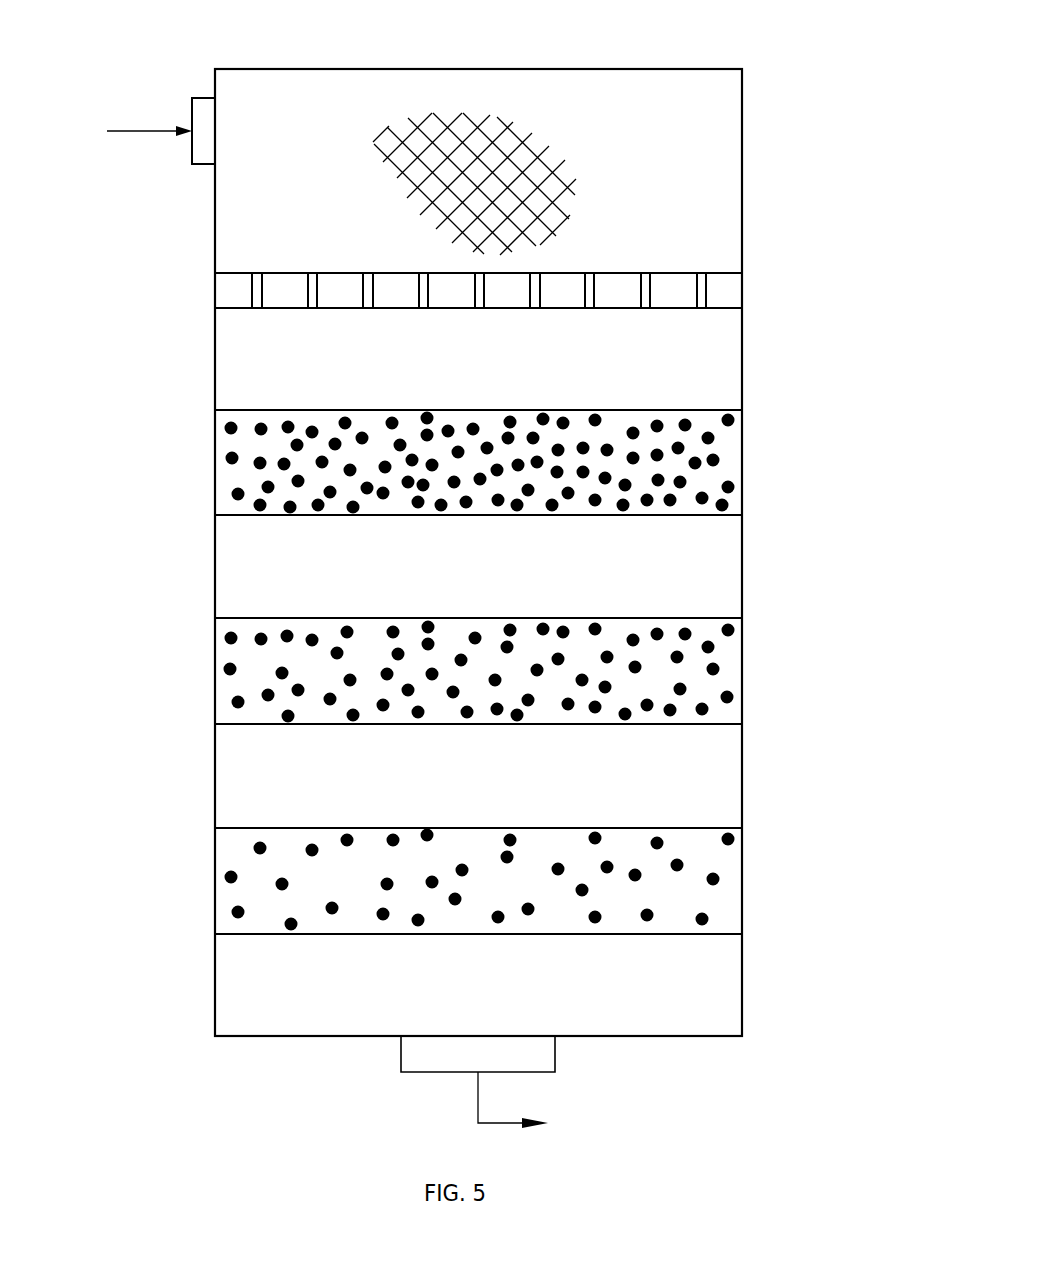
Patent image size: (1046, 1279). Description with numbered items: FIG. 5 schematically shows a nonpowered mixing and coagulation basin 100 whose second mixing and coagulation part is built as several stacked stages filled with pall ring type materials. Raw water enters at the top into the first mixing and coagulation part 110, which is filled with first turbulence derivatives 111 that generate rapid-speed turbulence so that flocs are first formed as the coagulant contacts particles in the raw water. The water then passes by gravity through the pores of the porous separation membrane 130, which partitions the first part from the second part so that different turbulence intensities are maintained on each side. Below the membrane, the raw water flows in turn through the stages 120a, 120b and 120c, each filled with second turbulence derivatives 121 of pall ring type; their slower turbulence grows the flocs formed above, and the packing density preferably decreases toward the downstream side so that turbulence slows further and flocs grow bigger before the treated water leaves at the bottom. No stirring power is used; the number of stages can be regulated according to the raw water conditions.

The nonpowered mixing and coagulation basin 100 is at (147, 45).
The first mixing and coagulation part 110 is at (742, 170).
The first turbulence derivatives 111 is at (462, 113).
The porous separation membrane 130 is at (742, 292).
The stage 120a is at (742, 455).
The stage 120b is at (489, 671).
The stage 120c is at (742, 878).
The second turbulence derivatives 121 is at (232, 702).